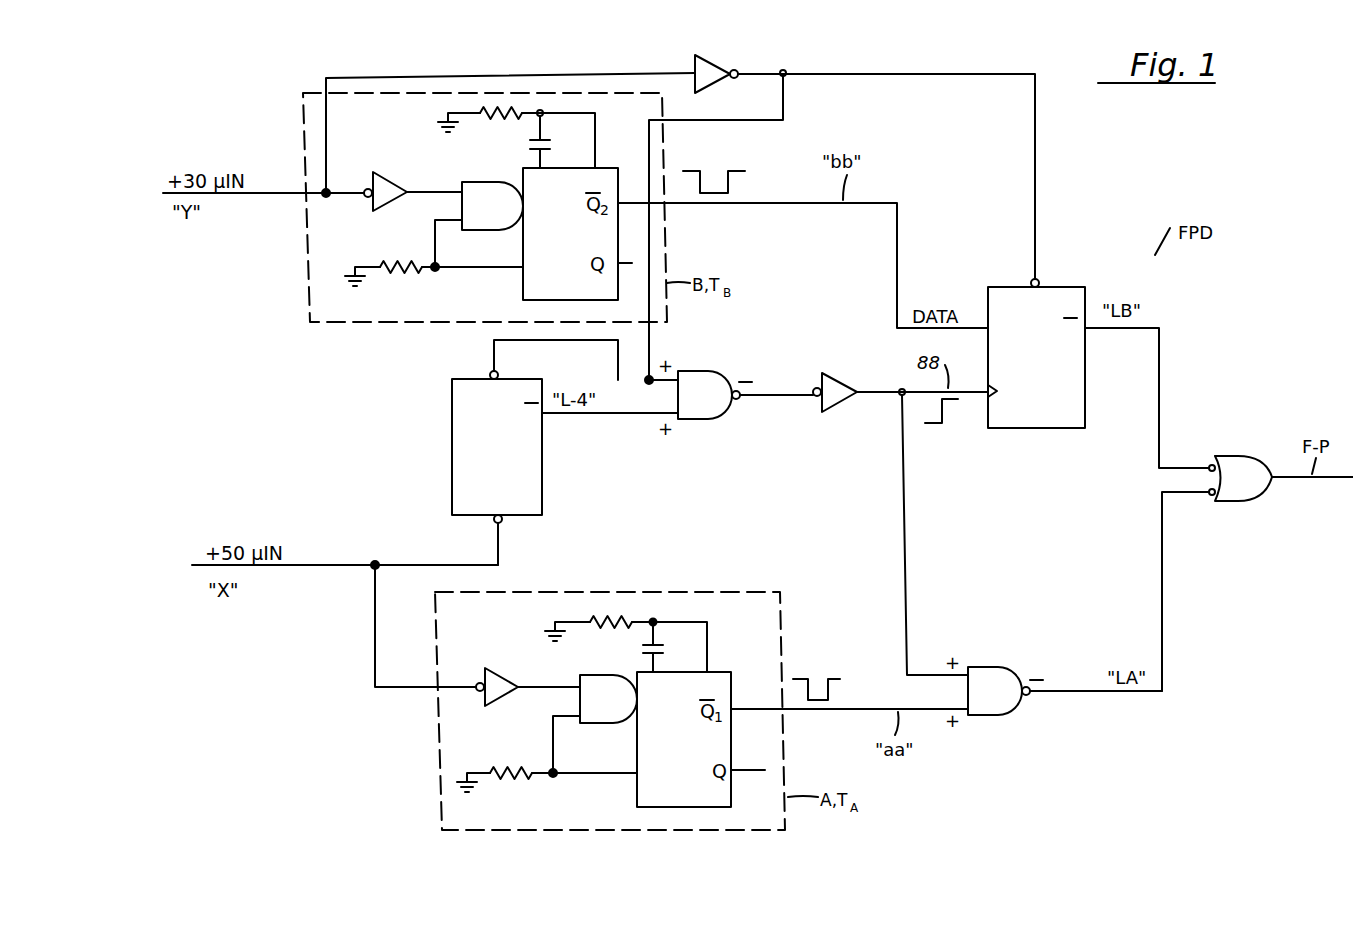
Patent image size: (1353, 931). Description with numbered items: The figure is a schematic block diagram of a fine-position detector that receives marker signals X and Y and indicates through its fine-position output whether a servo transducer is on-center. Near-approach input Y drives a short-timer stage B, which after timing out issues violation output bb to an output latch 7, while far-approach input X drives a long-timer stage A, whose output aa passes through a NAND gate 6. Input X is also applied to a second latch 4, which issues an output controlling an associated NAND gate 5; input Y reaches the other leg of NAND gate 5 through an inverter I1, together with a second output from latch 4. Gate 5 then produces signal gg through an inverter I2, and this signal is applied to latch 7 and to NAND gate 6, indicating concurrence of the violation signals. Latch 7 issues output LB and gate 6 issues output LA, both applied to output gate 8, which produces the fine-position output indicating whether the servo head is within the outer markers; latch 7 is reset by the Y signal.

The second latch 4 is at (452, 428).
The NAND gate 5 is at (712, 410).
The NAND gate 6 is at (1002, 672).
The output latch 7 is at (1058, 420).
The output gate 8 is at (1239, 456).
The inverter I1 is at (718, 80).
The inverter I2 is at (834, 403).